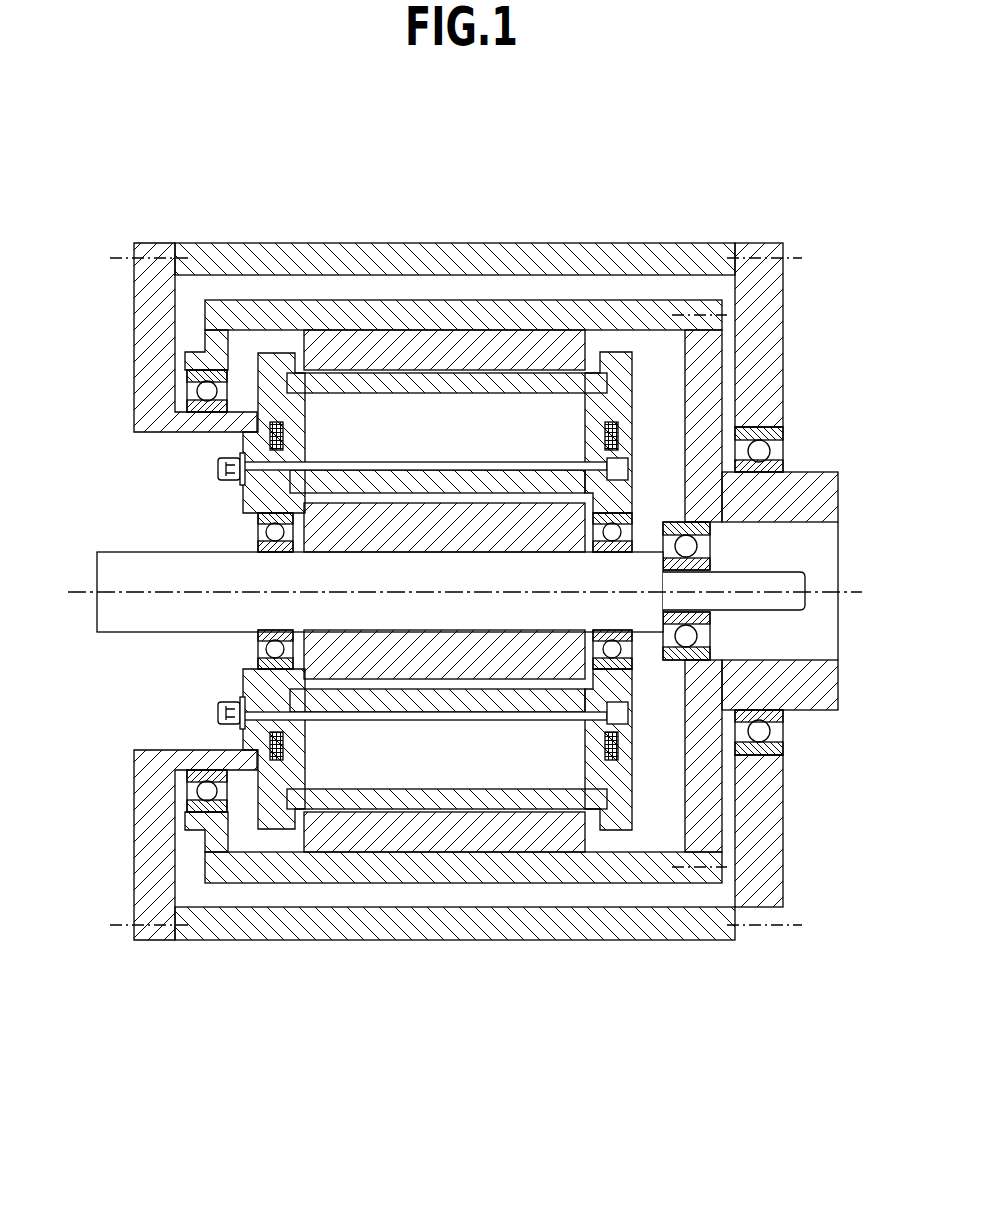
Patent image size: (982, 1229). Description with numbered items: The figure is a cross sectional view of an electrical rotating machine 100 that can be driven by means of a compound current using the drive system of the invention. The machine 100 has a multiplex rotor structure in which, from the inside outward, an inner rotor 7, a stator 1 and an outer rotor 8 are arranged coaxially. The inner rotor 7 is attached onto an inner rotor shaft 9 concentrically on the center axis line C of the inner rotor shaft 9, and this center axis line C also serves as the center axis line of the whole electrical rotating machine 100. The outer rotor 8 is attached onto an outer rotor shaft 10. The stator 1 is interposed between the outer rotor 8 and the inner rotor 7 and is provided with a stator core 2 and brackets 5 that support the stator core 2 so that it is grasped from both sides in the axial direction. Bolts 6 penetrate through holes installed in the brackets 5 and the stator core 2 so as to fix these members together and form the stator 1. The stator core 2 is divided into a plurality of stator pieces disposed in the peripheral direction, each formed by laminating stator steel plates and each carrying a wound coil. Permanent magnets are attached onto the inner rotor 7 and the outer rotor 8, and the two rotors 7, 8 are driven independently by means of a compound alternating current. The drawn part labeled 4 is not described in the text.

The electrical rotating machine 100 is at (562, 950).
The stator 1 is at (415, 592).
The stator core 2 is at (383, 371).
The flange 4 is at (803, 472).
The brackets 5 is at (272, 345).
The bolts 6 is at (218, 470).
The inner rotor 7 is at (362, 552).
The outer rotor 8 is at (496, 343).
The inner rotor shaft 9 is at (153, 612).
The outer rotor shaft 10 is at (656, 316).
The center axis line C is at (165, 592).